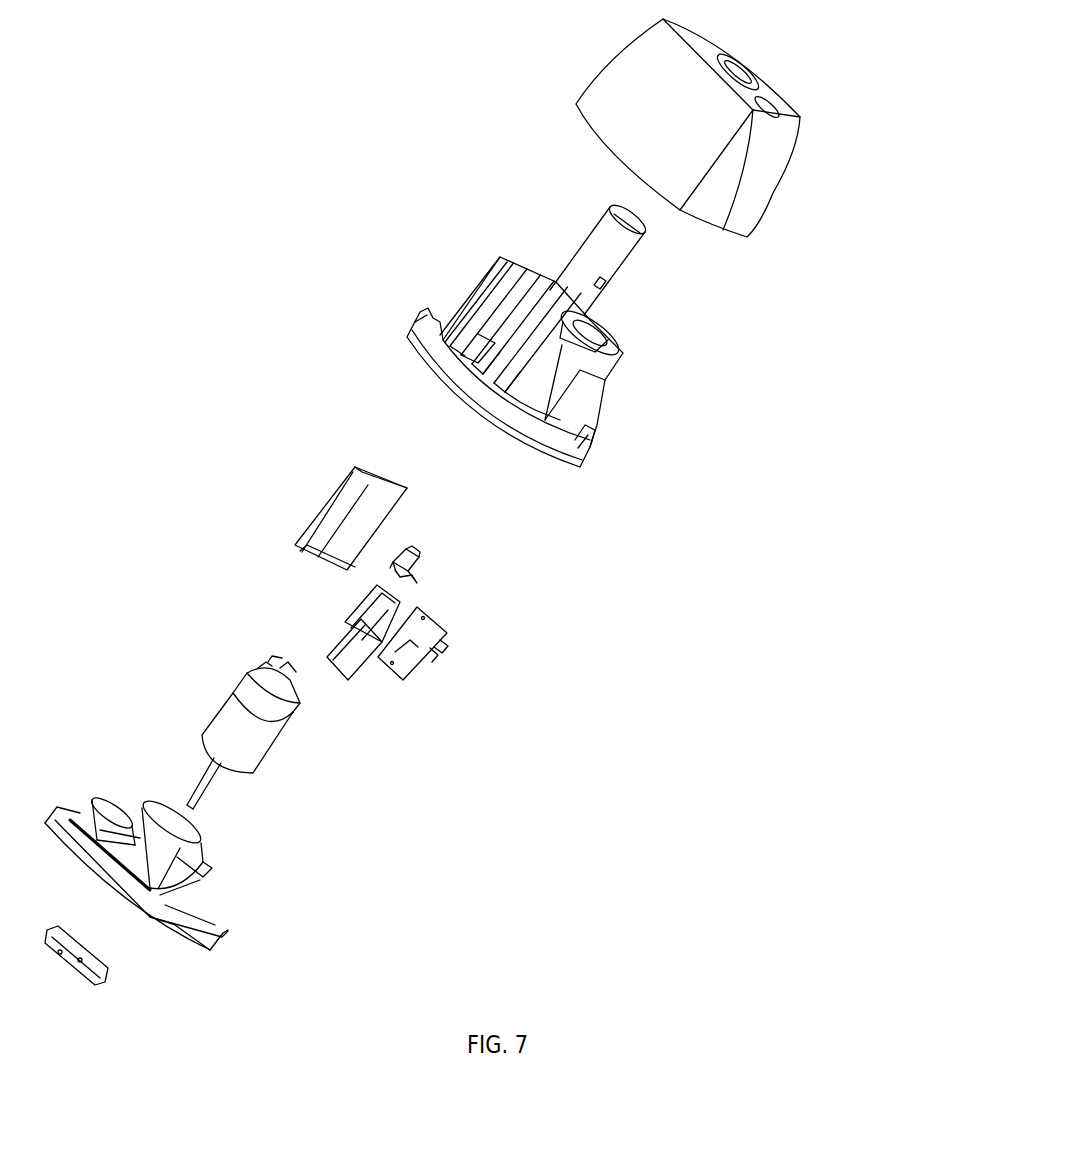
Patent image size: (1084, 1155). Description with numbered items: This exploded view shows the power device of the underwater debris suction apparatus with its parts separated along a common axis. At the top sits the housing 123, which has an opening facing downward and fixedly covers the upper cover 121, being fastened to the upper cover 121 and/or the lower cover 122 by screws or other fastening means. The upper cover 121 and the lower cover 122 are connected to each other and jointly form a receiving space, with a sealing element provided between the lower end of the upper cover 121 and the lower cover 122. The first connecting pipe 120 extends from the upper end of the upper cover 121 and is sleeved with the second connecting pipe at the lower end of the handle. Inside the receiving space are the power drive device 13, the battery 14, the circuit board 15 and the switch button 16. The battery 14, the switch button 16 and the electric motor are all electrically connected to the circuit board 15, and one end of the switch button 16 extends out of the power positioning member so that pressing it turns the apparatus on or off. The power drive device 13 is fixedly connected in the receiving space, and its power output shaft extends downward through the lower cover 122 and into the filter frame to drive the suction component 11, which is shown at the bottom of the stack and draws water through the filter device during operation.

The suction component 11 is at (103, 972).
The power drive device 13 is at (255, 745).
The battery 14 is at (330, 500).
The circuit board 15 is at (415, 647).
The switch button 16 is at (417, 557).
The first connecting pipe 120 is at (603, 265).
The upper cover 121 is at (587, 390).
The lower cover 122 is at (228, 931).
The housing 123 is at (777, 193).